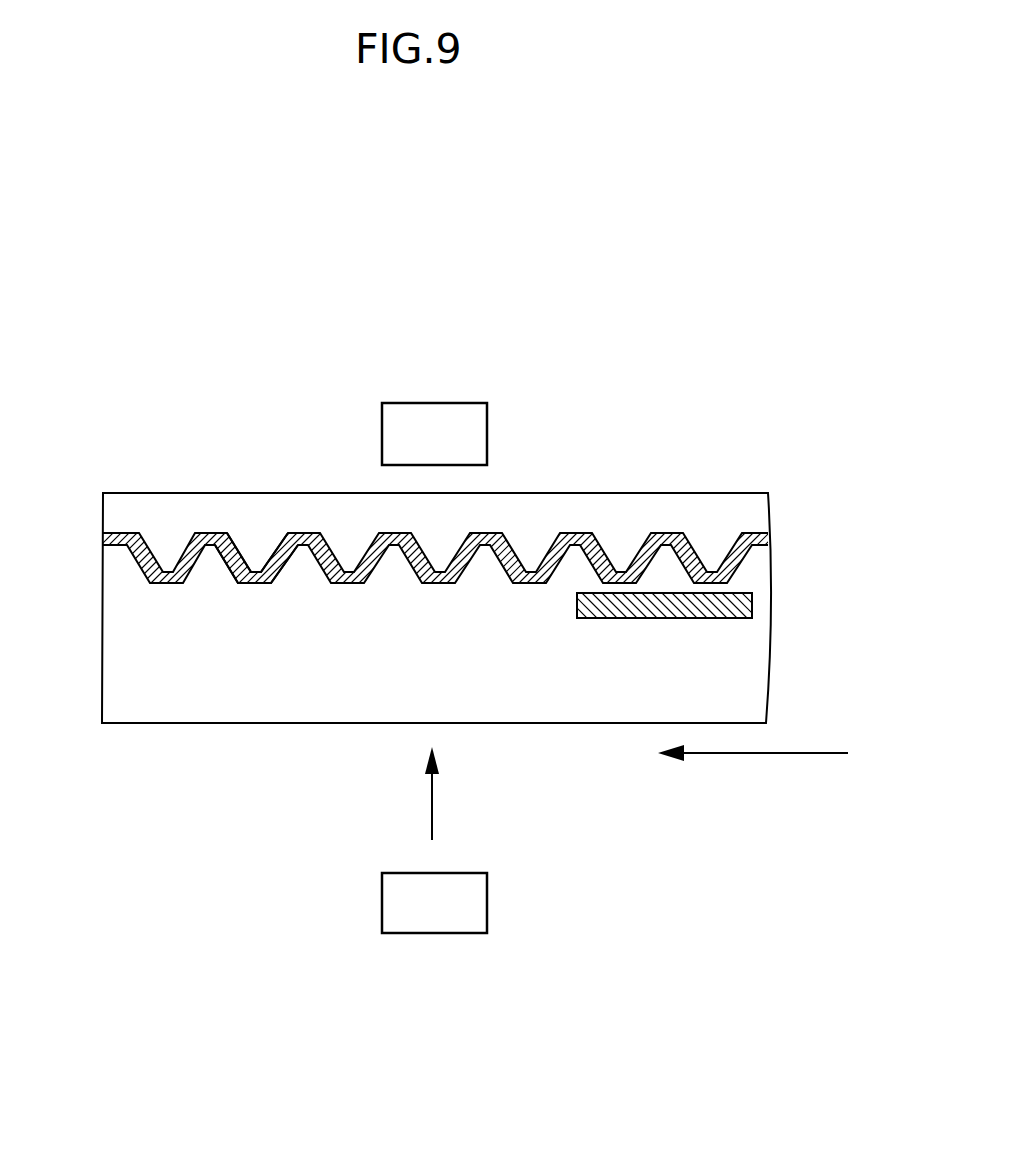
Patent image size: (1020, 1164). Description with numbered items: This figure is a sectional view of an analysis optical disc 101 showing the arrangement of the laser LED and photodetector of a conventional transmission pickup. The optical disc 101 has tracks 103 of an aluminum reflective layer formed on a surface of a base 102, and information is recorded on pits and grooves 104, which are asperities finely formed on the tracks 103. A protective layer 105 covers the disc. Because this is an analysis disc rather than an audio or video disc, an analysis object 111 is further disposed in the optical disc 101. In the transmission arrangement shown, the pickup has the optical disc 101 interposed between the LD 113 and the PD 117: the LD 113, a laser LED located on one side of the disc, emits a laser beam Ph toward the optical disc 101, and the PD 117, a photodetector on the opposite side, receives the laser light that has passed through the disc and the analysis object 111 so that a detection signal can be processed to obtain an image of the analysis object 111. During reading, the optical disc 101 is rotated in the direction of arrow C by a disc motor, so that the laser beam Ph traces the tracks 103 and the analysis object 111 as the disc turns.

The optical disc 101 is at (270, 724).
The base 102 is at (303, 723).
The tracks 103 is at (772, 542).
The pits and grooves 104 is at (257, 583).
The protective layer 105 is at (163, 510).
The analysis object 111 is at (732, 618).
The LD (laser LED) 113 is at (382, 900).
The PD (photodetector) 117 is at (428, 403).
The laser beam Ph is at (431, 805).
The direction of arrow C is at (767, 753).